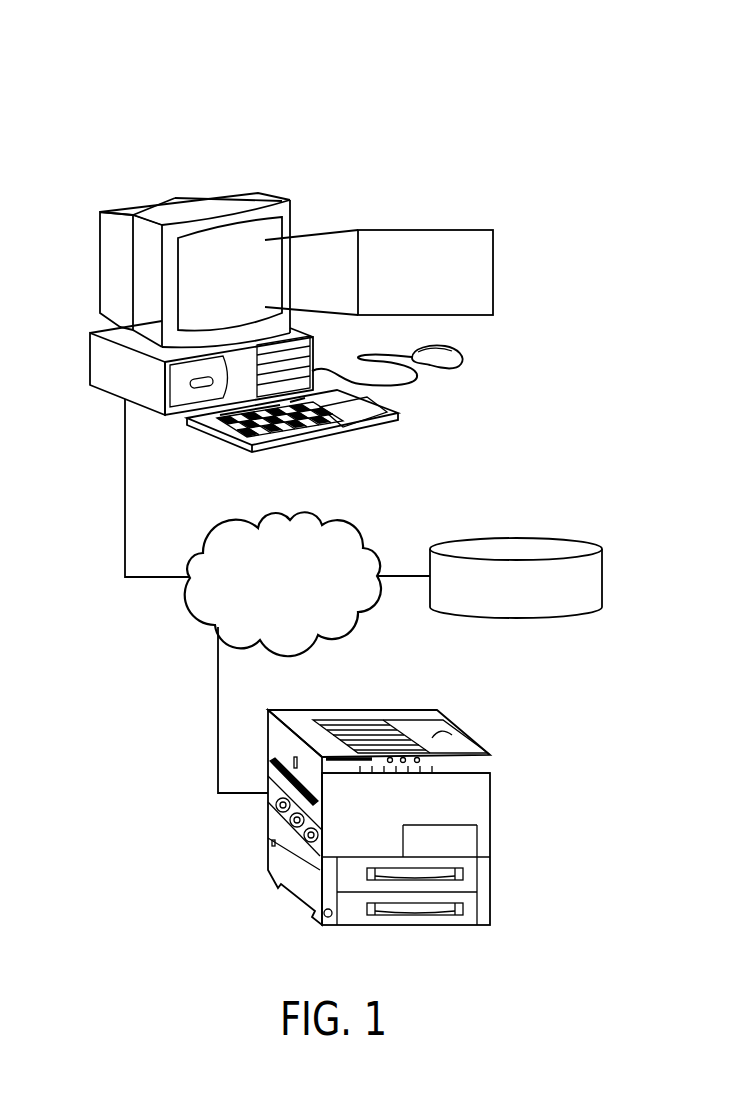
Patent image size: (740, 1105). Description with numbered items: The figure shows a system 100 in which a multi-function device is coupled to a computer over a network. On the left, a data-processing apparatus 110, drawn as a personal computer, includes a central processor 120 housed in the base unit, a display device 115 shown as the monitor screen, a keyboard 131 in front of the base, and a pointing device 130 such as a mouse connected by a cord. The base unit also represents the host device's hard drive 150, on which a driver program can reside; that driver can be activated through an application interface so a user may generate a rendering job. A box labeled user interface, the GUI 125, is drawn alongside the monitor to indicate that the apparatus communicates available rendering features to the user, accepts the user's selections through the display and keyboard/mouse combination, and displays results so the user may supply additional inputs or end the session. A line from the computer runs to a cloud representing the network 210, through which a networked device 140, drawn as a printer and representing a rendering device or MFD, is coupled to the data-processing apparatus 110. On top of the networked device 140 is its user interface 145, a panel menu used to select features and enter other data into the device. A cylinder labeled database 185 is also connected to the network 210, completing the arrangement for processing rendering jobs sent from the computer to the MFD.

The system 100 is at (550, 98).
The data-processing apparatus 110 is at (232, 198).
The display device 115 is at (228, 228).
The central processor 120 is at (107, 392).
The GUI 125 is at (428, 230).
The pointing device 130 is at (430, 392).
The keyboard 131 is at (213, 438).
The networked device 140 is at (410, 712).
The user interface 145 is at (420, 758).
The hard drive 150 is at (100, 360).
The database 185 is at (573, 541).
The network 210 is at (194, 610).